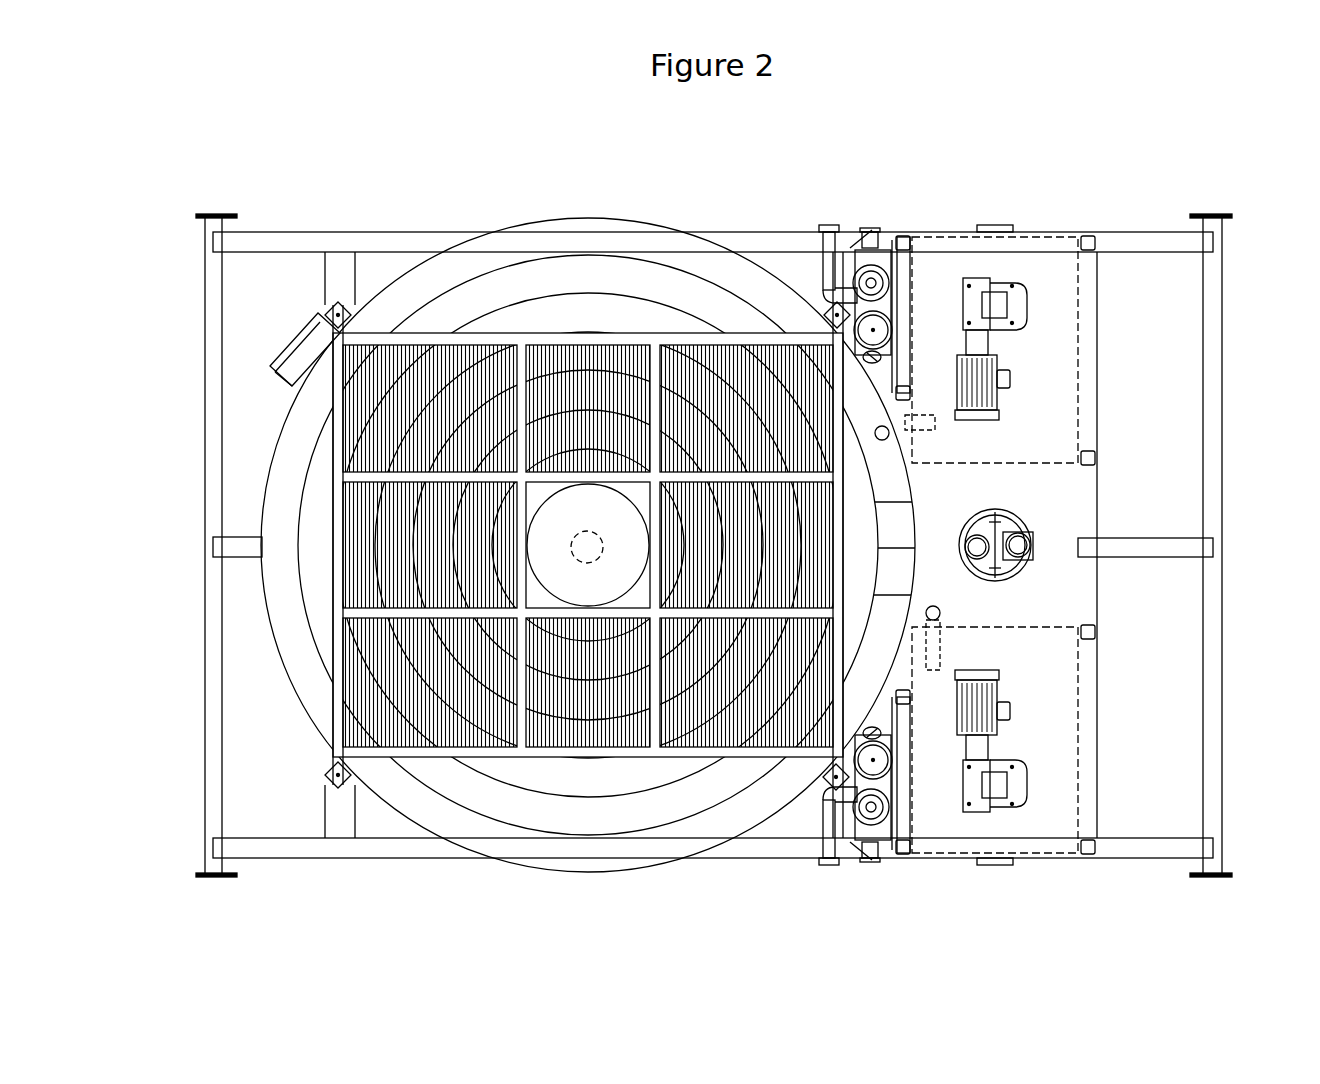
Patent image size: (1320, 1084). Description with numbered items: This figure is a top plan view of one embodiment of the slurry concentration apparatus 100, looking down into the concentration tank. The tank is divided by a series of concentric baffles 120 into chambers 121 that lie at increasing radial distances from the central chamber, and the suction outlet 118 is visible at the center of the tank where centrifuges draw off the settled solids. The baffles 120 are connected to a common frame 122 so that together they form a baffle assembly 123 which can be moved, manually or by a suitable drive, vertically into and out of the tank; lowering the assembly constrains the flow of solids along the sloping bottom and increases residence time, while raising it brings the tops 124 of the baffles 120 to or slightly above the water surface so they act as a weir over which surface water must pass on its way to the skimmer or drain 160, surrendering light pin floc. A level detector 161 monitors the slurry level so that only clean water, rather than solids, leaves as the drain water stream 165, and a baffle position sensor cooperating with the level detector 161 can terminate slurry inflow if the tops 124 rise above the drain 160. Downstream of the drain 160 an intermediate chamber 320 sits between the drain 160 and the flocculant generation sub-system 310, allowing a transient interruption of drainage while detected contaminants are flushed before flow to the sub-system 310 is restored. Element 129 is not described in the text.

The apparatus 100 is at (246, 482).
The outlet 118 is at (587, 547).
The baffles 120 is at (500, 262).
The chambers 121 is at (568, 318).
The common frame 122 is at (333, 458).
The baffle assembly 123 is at (617, 203).
The tops of baffles 124 is at (614, 292).
The pump assembly 129 is at (905, 400).
The skimmer or drain 160 is at (905, 576).
The level detector 161 is at (932, 520).
The drain water stream 165 is at (1035, 557).
The flocculant generation sub-system 310 is at (1000, 580).
The intermediate chamber 320 is at (1047, 590).